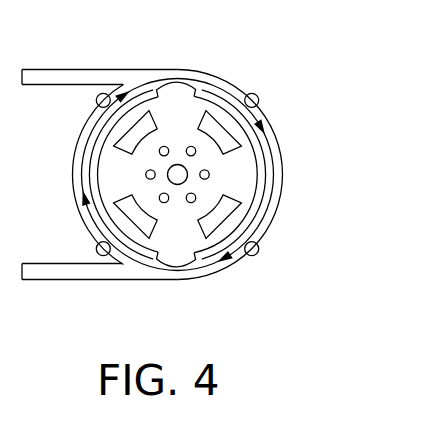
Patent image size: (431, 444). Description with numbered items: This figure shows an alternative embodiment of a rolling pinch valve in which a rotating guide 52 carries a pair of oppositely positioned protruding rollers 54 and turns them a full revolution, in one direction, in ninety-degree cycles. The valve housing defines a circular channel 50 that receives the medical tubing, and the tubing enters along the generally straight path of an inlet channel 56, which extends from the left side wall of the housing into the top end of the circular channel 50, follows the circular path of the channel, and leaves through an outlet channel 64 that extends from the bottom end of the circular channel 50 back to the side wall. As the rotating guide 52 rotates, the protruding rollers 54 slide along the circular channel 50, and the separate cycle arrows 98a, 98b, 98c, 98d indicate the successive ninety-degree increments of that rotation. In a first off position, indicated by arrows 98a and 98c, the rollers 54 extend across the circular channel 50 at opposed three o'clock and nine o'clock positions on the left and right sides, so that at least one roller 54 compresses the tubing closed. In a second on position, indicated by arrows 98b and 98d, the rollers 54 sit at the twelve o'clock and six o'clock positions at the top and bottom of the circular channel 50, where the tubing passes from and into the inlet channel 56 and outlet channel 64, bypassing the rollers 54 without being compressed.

The circular channel 50 is at (236, 101).
The rotating guide 52 is at (185, 113).
The protruding roller 54 is at (182, 88).
The inlet channel 56 is at (97, 79).
The outlet channel 64 is at (107, 272).
The cycle arrow 98a is at (265, 116).
The cycle arrow 98b is at (308, 216).
The cycle arrow 98c is at (92, 219).
The cycle arrow 98d is at (90, 118).